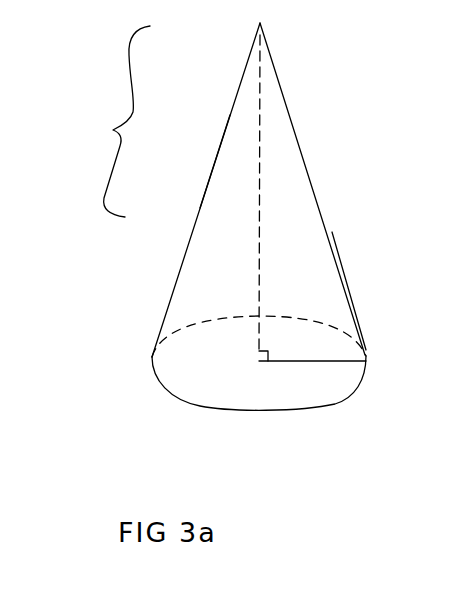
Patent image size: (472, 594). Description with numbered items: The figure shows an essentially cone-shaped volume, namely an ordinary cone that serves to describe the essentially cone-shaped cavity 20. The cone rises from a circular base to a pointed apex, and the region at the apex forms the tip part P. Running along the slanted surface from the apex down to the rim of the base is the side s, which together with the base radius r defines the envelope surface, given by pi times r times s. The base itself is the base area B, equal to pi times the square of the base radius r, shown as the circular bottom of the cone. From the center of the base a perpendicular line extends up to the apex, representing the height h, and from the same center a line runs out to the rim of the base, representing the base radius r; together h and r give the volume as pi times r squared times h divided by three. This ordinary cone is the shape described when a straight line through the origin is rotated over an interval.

The essentially cone-shaped cavity 20 is at (302, 267).
The tip part P is at (55, 121).
The side S is at (200, 208).
The base area B is at (205, 375).
The height h is at (267, 198).
The base radius r is at (312, 350).